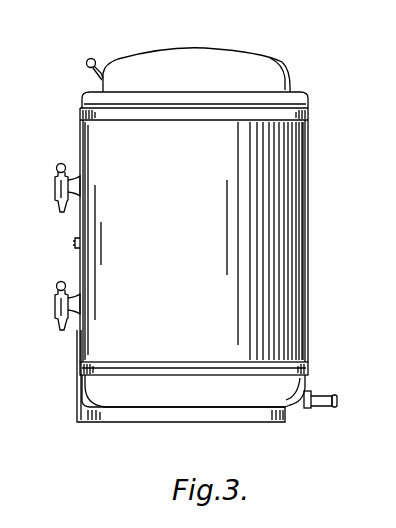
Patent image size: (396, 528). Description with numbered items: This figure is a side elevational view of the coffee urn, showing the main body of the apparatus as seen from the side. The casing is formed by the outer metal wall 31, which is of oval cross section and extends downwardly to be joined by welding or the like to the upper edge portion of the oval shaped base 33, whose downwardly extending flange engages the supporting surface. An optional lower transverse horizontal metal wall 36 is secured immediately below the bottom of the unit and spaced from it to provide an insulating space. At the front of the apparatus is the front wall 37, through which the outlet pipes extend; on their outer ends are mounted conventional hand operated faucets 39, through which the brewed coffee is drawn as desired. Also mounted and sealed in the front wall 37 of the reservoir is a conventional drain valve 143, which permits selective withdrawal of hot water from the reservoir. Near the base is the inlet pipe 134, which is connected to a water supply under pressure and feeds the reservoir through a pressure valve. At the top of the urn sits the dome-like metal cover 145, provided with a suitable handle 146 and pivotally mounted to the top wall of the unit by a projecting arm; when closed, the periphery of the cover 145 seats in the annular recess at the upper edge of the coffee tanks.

The dome-like metal cover 145 is at (176, 48).
The handle 146 is at (100, 61).
The outer metal wall 31 is at (308, 282).
The lower transverse horizontal metal wall 36 is at (337, 195).
The front wall 37 is at (79, 141).
The base 33 is at (98, 424).
The inlet pipe 134 is at (320, 408).
The drain valve 143 is at (54, 196).
The hand operated faucets 39 is at (53, 308).